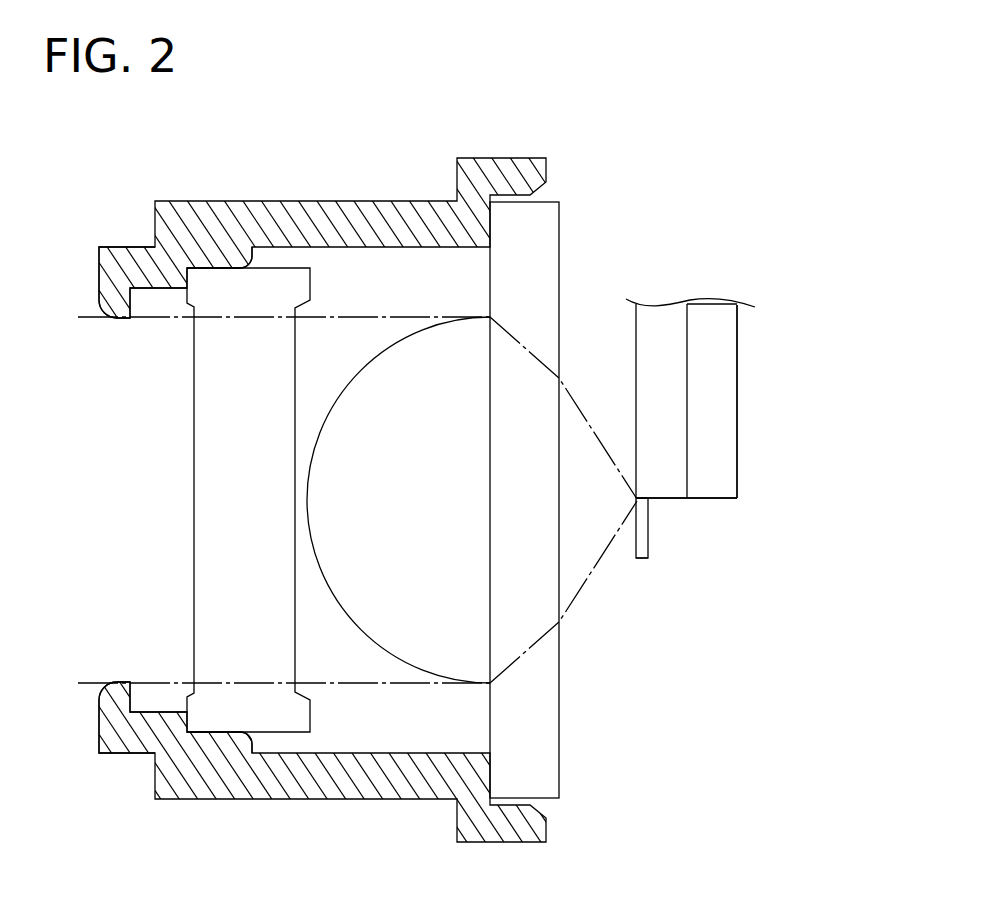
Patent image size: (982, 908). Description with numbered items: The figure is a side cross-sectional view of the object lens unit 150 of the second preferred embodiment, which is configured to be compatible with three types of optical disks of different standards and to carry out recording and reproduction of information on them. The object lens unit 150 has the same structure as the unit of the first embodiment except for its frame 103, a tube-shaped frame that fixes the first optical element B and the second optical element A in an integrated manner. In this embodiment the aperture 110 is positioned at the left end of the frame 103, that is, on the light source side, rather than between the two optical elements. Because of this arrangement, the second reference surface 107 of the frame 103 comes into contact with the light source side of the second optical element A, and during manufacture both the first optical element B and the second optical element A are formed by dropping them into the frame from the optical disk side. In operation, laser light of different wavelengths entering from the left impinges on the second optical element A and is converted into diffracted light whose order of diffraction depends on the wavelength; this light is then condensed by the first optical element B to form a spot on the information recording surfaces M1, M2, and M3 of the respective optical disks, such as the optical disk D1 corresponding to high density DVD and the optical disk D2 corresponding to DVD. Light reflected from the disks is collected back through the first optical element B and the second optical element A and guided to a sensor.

The frame 103 is at (373, 800).
The second reference surface 107 is at (200, 284).
The aperture 110 is at (110, 307).
The object lens unit 150 is at (777, 168).
The second optical element A is at (194, 575).
The first optical element B is at (563, 748).
The information recording surface M1 is at (647, 549).
The information recording surface M2 is at (680, 408).
The information recording surface M3 is at (730, 338).
The optical disk D1 is at (641, 560).
The optical disk D2 is at (663, 488).